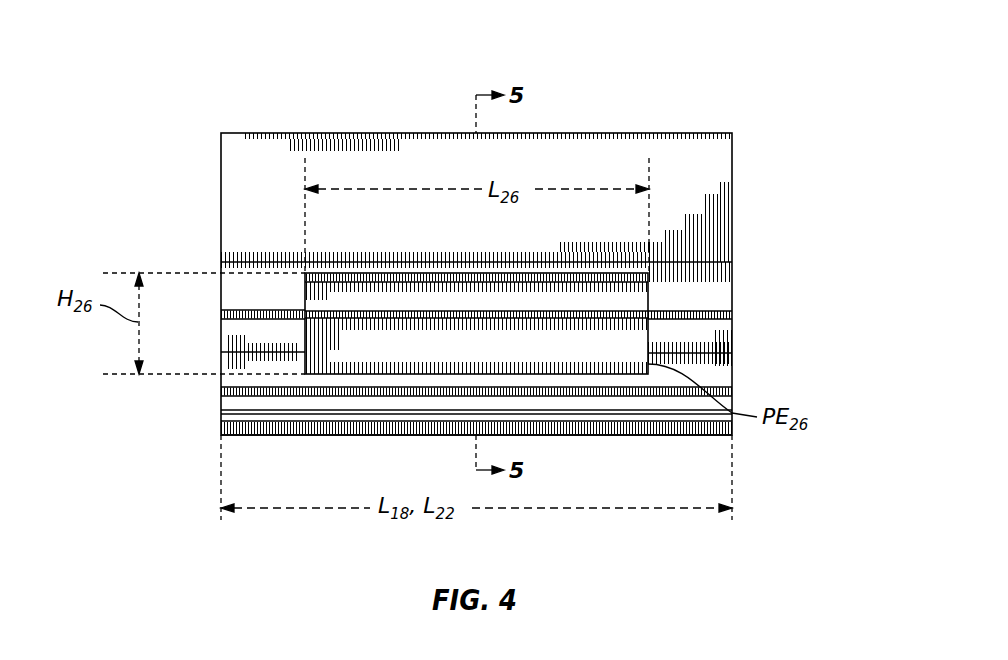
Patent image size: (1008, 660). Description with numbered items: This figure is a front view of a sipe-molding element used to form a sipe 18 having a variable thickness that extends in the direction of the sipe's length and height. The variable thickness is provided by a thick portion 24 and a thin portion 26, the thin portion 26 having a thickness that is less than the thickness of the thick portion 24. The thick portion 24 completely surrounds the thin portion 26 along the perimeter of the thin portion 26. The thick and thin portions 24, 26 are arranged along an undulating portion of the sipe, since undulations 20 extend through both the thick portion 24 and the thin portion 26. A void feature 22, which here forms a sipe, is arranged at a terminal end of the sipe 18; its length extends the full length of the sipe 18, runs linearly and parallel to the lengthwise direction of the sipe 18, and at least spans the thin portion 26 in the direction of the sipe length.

The sipe 18 is at (789, 90).
The undulations 20 is at (727, 316).
The void feature 22 is at (219, 427).
The thick portion 24 is at (234, 166).
The thin portion 26 is at (376, 298).